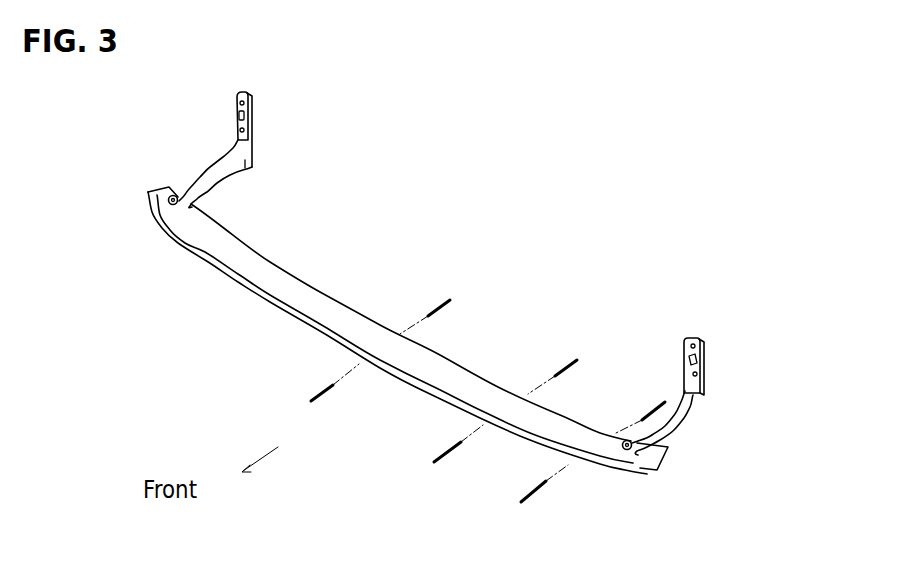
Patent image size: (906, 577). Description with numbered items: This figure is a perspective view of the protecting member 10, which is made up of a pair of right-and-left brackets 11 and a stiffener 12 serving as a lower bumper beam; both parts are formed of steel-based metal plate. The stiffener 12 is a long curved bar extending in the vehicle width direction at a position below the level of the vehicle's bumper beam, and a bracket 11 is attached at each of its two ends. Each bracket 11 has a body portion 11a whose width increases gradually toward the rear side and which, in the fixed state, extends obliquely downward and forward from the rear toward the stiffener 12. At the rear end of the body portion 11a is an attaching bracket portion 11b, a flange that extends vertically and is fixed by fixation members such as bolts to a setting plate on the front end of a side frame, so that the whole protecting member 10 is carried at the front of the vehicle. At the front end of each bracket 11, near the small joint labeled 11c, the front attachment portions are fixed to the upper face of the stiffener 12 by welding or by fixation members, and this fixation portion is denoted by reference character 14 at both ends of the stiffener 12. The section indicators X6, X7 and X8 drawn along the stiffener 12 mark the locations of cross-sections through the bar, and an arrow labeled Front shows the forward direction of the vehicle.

The protecting member 10 is at (466, 245).
The bracket 11 is at (210, 163).
The body portion 11a is at (436, 297).
The attaching bracket portion 11b is at (249, 118).
The bracket pivot joint 11c is at (173, 195).
The stiffener 12 is at (274, 273).
The fixation portion 14 is at (168, 203).
The section line X6 is at (441, 311).
The section line X7 is at (568, 369).
The section line X8 is at (669, 421).